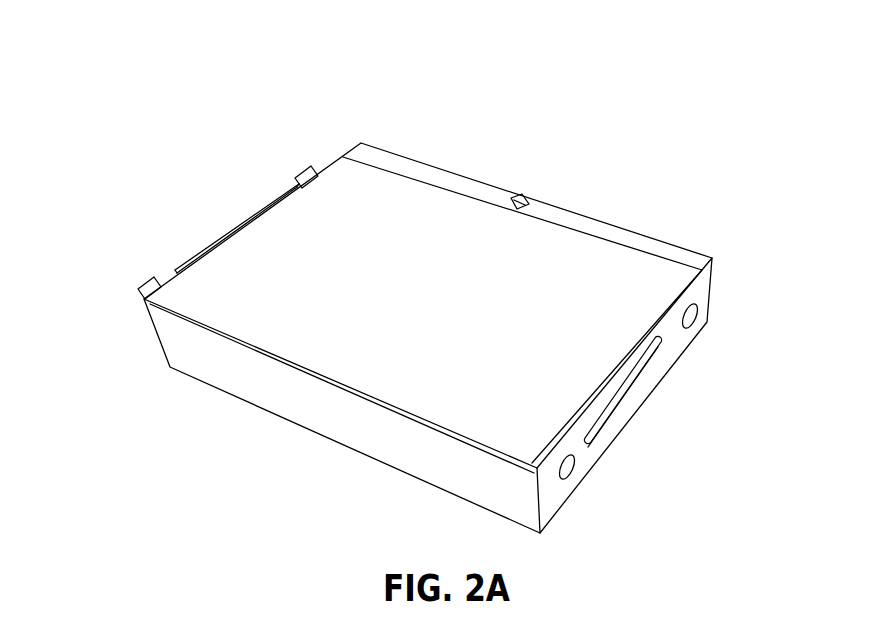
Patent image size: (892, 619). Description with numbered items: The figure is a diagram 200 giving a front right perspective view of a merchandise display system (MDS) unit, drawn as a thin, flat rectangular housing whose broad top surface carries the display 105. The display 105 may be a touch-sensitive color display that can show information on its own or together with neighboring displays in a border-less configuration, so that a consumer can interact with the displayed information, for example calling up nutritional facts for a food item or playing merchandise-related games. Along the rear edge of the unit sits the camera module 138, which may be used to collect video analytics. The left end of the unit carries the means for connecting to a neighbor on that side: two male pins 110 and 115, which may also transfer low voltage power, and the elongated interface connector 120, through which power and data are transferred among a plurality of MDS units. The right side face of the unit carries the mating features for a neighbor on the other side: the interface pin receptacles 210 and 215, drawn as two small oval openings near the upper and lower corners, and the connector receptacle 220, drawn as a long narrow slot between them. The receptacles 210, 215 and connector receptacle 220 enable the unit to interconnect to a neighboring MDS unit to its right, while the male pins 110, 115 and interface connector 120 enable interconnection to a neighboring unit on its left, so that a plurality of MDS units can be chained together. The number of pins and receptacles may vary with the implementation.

The diagram 200 is at (238, 89).
The display 105 is at (453, 309).
The male pin 110 is at (293, 173).
The male pin 115 is at (143, 283).
The interface connector 120 is at (232, 227).
The camera module 138 is at (517, 193).
The interface pin receptacle 210 is at (694, 318).
The interface pin receptacle 215 is at (565, 475).
The connector receptacle 220 is at (630, 397).